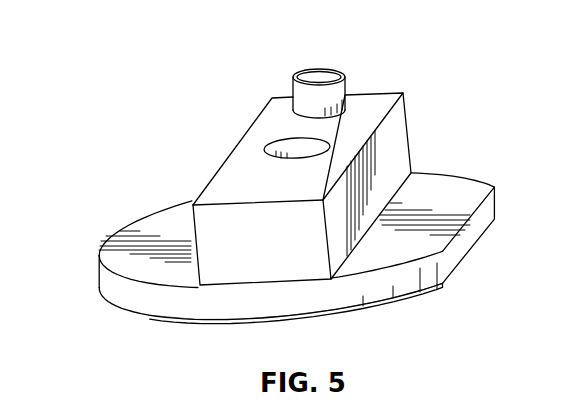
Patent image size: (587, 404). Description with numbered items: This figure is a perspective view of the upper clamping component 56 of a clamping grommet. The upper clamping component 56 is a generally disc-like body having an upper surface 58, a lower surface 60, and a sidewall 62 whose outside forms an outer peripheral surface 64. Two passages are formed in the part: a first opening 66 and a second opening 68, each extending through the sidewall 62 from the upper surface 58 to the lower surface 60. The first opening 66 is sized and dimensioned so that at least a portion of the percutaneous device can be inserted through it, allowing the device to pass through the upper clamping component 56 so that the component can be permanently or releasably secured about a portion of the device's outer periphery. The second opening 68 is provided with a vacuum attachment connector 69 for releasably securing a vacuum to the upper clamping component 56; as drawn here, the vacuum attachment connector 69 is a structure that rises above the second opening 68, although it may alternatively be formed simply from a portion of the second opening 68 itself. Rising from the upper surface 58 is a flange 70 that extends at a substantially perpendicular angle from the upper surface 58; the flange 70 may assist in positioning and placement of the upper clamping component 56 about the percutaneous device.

The upper clamping component 56 is at (458, 72).
The upper surface 58 is at (445, 187).
The lower surface 60 is at (412, 296).
The sidewall 62 is at (97, 273).
The outer peripheral surface 64 is at (233, 302).
The first opening 66 is at (290, 143).
The second opening 68 is at (316, 75).
The vacuum attachment connector 69 is at (334, 87).
The flange 70 is at (393, 127).